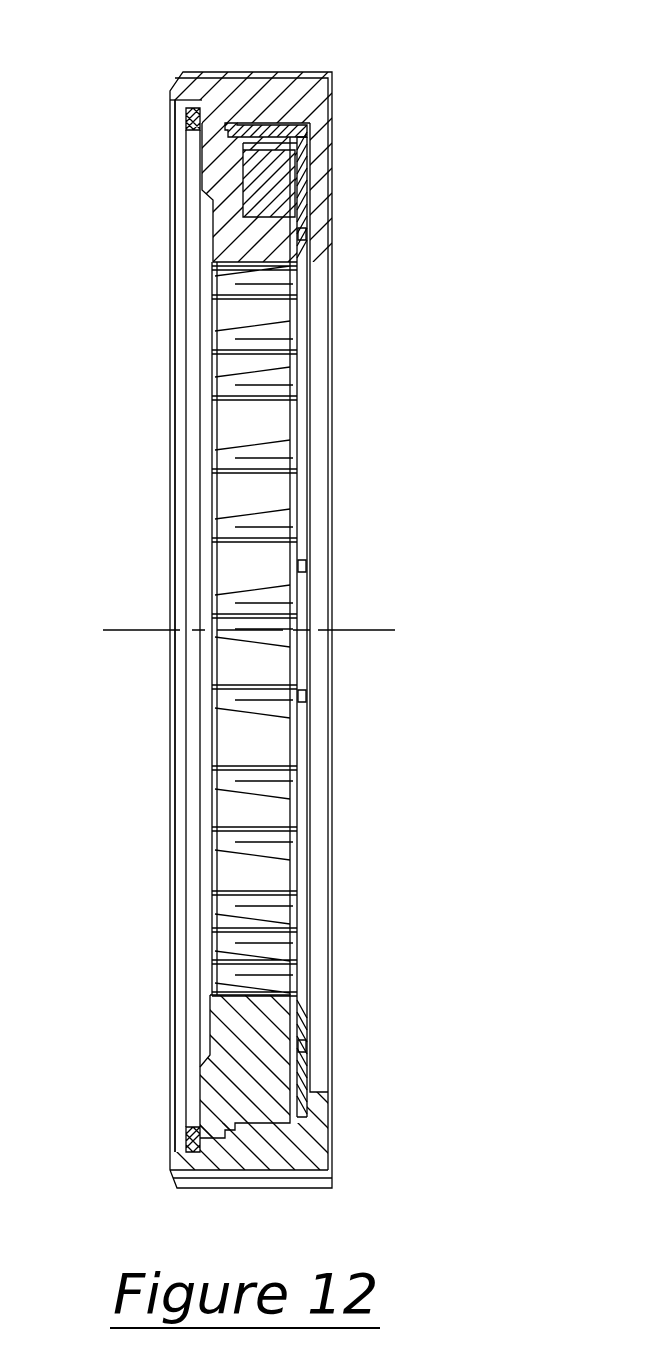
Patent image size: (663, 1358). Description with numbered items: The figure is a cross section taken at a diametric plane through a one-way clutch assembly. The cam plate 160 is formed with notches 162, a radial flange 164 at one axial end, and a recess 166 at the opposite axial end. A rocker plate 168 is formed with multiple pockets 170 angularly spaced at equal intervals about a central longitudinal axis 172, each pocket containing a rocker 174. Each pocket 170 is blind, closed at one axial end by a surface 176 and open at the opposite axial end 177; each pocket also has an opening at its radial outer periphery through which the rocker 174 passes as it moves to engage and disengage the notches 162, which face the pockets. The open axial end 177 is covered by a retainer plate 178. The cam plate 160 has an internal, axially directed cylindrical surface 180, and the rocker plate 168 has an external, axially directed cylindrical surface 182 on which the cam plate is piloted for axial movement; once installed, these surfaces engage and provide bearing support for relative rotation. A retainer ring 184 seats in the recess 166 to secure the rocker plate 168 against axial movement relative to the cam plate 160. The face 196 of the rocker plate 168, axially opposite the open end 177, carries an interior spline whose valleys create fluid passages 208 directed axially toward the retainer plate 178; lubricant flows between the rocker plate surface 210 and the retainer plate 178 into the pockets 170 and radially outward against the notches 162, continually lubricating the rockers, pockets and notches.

The cam plate 160 is at (300, 90).
The notches 162 is at (310, 133).
The radial flange 164 is at (325, 155).
The recess 166 is at (170, 131).
The rocker plate 168 is at (275, 253).
The pockets 170 is at (292, 197).
The central longitudinal axis 172 is at (350, 630).
The rocker 174 is at (293, 200).
The surface 176 is at (243, 215).
The open axial end 177 is at (293, 185).
The retainer plate 178 is at (308, 262).
The internal cylindrical surface 180 is at (182, 1137).
The external cylindrical surface 182 is at (180, 1177).
The retainer ring 184 is at (193, 492).
The face 196 is at (193, 157).
The fluid passage 208 is at (237, 270).
The rocker plate surface 210 is at (313, 235).